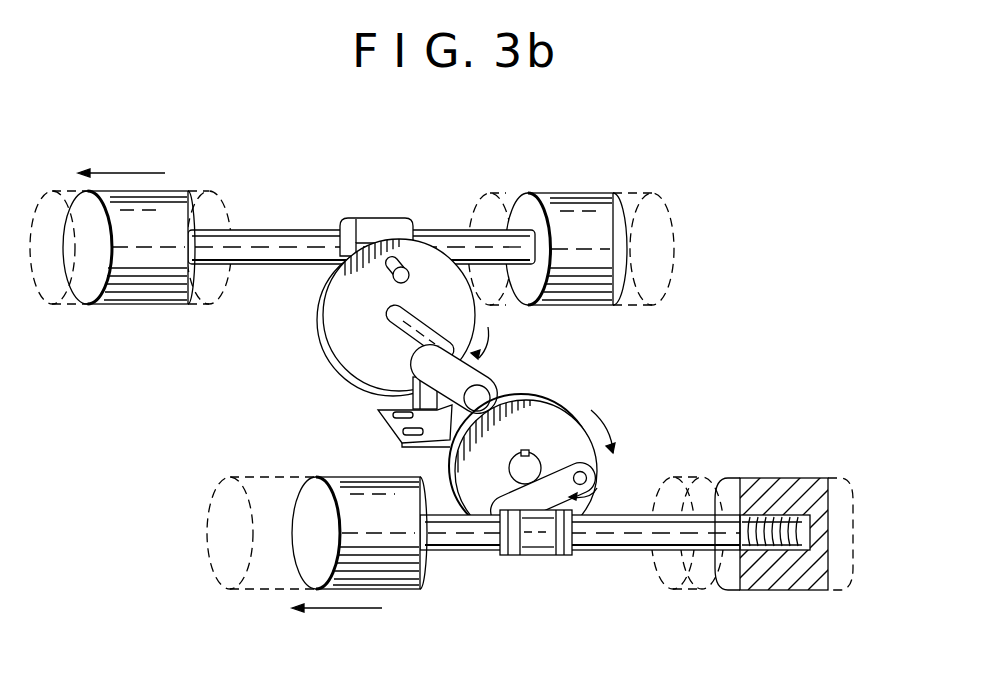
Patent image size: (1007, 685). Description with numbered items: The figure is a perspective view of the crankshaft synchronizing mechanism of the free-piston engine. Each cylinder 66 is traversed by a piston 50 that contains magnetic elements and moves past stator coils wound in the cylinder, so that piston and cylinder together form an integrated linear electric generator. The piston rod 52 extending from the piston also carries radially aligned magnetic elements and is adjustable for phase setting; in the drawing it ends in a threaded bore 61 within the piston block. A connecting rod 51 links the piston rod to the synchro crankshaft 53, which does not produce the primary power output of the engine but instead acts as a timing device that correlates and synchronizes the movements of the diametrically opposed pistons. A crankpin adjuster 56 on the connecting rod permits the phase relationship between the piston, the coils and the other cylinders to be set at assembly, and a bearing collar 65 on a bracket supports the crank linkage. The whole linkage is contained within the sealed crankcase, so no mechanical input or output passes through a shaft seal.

The piston 50 is at (785, 484).
The connecting rod 51 is at (597, 493).
The piston rod 52 is at (565, 556).
The synchro crankshaft 53 is at (557, 401).
The crankpin adjuster 56 is at (530, 541).
The threaded bore 61 is at (768, 550).
The bearing collar 65 is at (486, 386).
The cylinder 66 is at (699, 486).